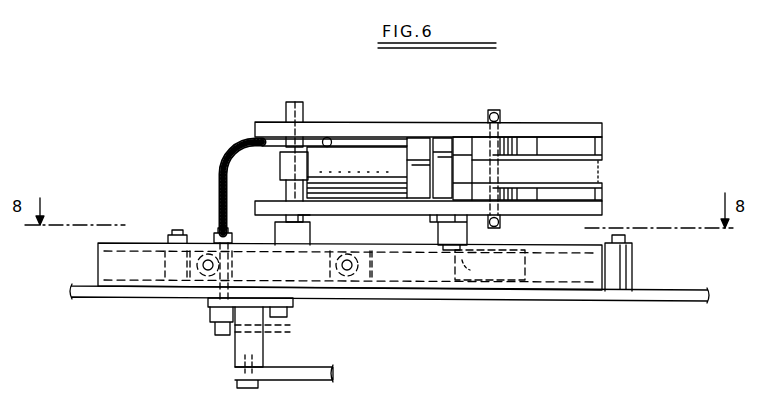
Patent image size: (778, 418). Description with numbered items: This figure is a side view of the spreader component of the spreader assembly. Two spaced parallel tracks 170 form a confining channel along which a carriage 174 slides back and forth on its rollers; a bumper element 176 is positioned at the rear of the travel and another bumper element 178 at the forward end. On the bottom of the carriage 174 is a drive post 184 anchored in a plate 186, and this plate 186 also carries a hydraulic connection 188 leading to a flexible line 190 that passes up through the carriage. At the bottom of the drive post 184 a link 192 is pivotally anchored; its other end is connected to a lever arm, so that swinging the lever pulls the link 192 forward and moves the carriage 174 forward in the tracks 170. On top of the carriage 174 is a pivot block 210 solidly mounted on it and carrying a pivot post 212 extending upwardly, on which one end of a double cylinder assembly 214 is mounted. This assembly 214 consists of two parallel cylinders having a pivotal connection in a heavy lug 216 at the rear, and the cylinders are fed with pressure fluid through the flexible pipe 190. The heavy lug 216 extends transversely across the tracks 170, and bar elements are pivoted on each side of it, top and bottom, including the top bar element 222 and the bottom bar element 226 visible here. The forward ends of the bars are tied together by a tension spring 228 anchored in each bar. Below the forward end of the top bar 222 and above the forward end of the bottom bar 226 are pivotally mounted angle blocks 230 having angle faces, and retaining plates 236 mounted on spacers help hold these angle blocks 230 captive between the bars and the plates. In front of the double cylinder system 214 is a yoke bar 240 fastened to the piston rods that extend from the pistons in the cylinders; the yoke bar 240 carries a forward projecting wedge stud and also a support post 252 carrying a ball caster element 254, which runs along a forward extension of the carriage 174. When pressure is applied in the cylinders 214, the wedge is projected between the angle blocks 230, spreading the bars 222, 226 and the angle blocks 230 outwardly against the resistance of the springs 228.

The tracks 170 is at (127, 270).
The carriage 174 is at (323, 260).
The bumper element 176 is at (166, 240).
The bumper element 178 is at (617, 285).
The drive post 184 is at (245, 352).
The plate 186 is at (207, 301).
The hydraulic connection 188 is at (296, 332).
The flexible line 190 is at (225, 168).
The link 192 is at (313, 372).
The pivot block 210 is at (282, 232).
The pivot post 212 is at (300, 102).
The double cylinder assembly 214 is at (377, 147).
The heavy lug 216 is at (287, 163).
The bar element 222 is at (440, 125).
The bar element 226 is at (415, 205).
The tension spring 228 is at (498, 110).
The angle block 230 is at (577, 150).
The retaining plate 236 is at (594, 182).
The yoke bar 240 is at (447, 150).
The support post 252 is at (437, 246).
The ball caster element 254 is at (490, 265).